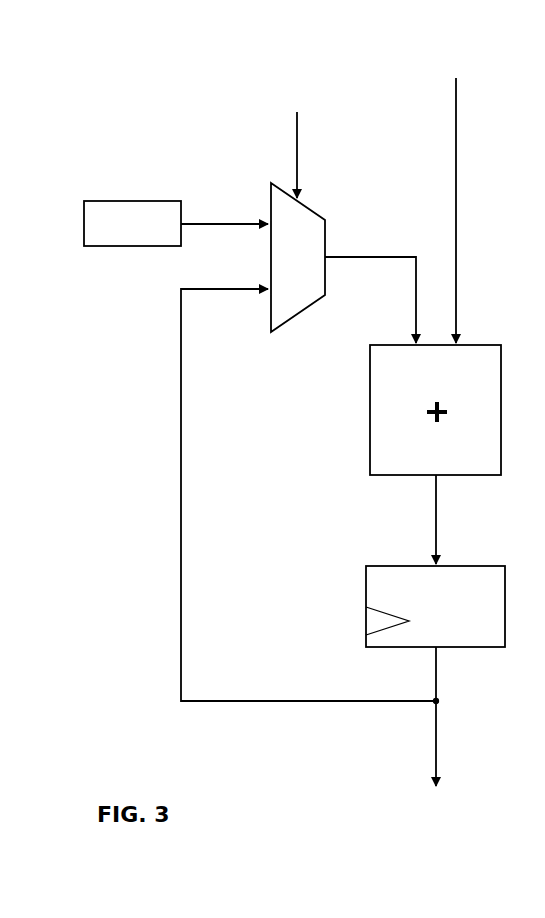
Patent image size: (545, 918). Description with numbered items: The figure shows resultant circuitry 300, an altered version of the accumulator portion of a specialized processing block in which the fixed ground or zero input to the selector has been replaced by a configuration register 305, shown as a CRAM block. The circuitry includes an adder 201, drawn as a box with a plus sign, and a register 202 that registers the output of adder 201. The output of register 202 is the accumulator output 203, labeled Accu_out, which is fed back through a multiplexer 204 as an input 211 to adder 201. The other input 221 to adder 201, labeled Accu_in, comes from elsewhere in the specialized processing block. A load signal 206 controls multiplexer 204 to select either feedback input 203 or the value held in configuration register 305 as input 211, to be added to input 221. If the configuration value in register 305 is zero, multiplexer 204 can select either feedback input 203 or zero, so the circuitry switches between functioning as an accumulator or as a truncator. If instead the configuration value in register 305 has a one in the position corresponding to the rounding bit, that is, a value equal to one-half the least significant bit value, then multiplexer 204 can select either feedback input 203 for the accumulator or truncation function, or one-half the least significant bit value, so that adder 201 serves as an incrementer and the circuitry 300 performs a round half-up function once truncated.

The resultant circuitry 300 is at (105, 40).
The configuration register 305 is at (133, 200).
The load signal 206 is at (297, 157).
The multiplexer 204 is at (312, 207).
The input 221 is at (456, 213).
The input 211 is at (416, 302).
The adder 201 is at (476, 345).
The register 202 is at (465, 566).
The accumulator output 203 is at (436, 746).